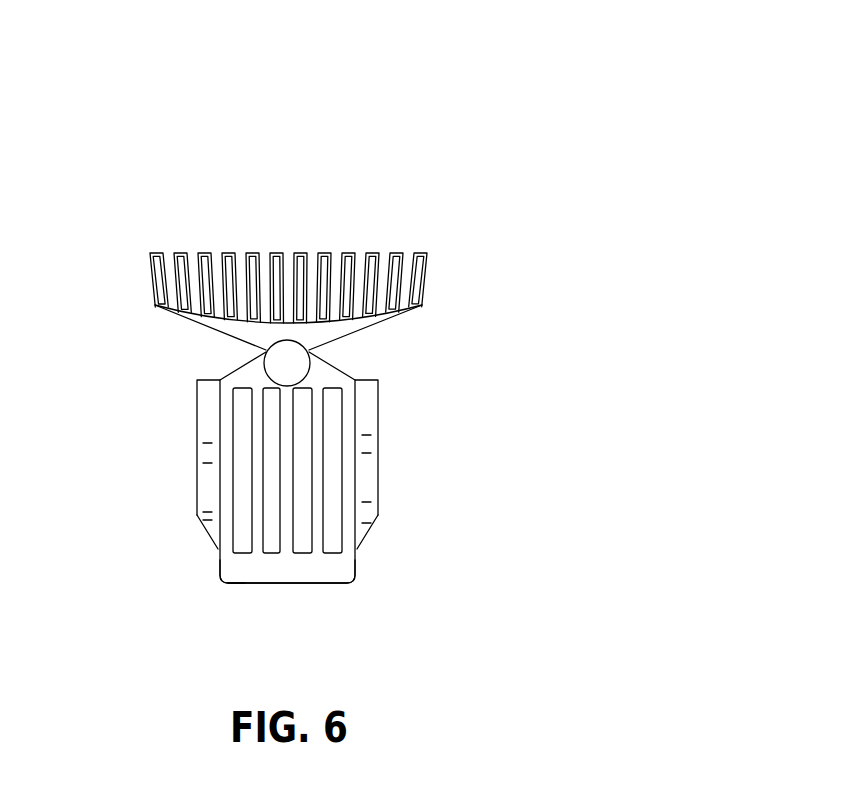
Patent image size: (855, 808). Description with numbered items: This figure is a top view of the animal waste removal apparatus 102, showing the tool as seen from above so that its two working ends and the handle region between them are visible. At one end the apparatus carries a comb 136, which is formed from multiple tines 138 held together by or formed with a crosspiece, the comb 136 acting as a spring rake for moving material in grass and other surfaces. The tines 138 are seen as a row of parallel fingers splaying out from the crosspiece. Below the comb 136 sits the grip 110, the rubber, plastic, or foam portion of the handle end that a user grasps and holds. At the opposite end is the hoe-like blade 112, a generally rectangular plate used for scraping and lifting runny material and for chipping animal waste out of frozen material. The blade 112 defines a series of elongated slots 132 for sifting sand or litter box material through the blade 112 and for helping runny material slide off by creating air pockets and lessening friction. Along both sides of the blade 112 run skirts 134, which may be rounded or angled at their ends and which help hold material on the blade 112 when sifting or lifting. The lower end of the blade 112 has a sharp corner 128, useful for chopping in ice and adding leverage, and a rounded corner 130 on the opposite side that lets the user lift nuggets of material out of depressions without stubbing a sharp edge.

The animal waste removal apparatus 102 is at (388, 80).
The grip 110 is at (311, 364).
The blade 112 is at (378, 478).
The sharp corner 128 is at (355, 583).
The rounded corner 130 is at (220, 580).
The slots 132 is at (273, 543).
The skirts 134 is at (208, 487).
The comb 136 is at (428, 272).
The tines 138 is at (202, 253).